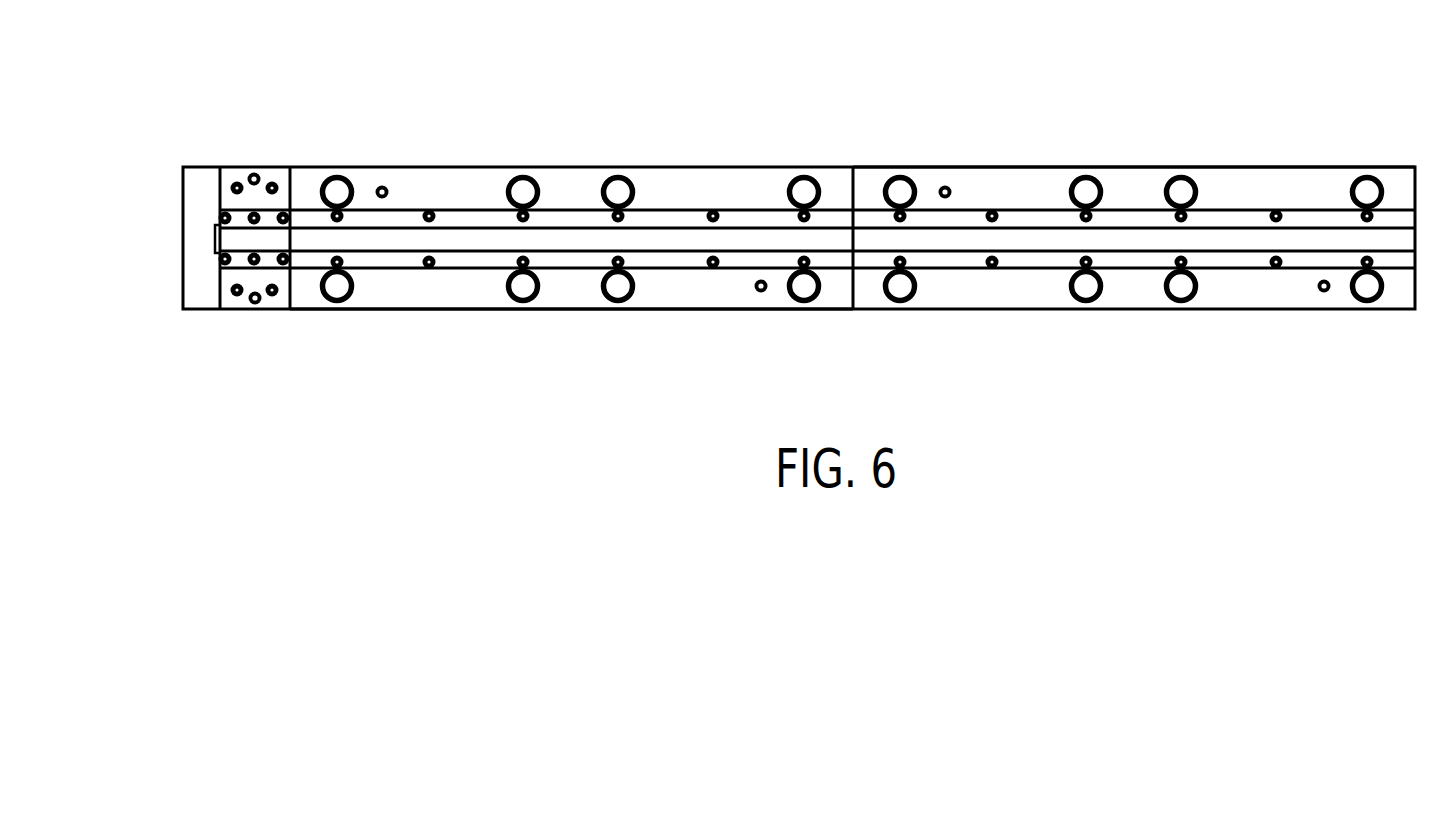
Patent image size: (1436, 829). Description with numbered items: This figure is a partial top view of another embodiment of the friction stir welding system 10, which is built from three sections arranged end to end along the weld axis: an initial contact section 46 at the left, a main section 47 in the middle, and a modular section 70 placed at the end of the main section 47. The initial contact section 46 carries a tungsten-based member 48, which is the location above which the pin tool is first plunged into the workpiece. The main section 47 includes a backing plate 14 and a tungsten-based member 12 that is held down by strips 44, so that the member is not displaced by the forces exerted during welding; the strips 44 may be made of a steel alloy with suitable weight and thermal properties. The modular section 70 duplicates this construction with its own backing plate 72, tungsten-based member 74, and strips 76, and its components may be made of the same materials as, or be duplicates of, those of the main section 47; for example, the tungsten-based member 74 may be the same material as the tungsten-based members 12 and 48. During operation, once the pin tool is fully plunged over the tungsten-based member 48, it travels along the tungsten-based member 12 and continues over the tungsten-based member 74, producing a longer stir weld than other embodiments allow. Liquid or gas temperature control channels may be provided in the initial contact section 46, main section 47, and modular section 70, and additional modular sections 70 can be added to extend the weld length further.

The friction stir welding system 10 is at (781, 68).
The tungsten-based member 12 is at (545, 238).
The backing plate 14 is at (572, 295).
The strips 44 is at (685, 218).
The initial contact section 46 is at (258, 148).
The main section 47 is at (448, 330).
The tungsten-based member 48 is at (230, 237).
The modular section 70 is at (1113, 330).
The backing plate 72 is at (1023, 185).
The tungsten-based member 74 is at (983, 242).
The strips 76 is at (1213, 260).